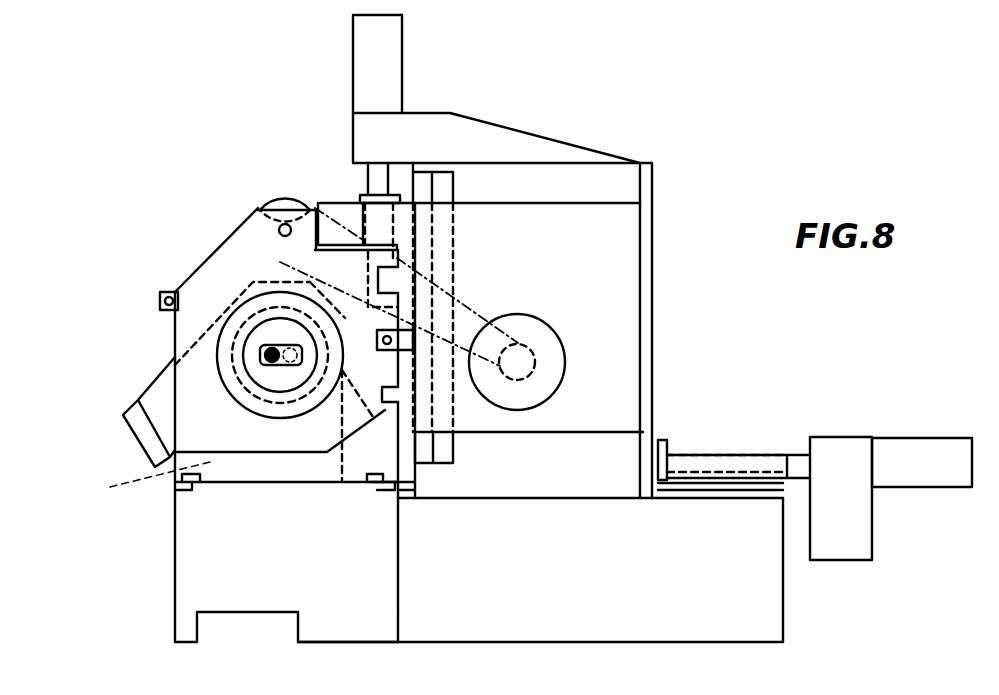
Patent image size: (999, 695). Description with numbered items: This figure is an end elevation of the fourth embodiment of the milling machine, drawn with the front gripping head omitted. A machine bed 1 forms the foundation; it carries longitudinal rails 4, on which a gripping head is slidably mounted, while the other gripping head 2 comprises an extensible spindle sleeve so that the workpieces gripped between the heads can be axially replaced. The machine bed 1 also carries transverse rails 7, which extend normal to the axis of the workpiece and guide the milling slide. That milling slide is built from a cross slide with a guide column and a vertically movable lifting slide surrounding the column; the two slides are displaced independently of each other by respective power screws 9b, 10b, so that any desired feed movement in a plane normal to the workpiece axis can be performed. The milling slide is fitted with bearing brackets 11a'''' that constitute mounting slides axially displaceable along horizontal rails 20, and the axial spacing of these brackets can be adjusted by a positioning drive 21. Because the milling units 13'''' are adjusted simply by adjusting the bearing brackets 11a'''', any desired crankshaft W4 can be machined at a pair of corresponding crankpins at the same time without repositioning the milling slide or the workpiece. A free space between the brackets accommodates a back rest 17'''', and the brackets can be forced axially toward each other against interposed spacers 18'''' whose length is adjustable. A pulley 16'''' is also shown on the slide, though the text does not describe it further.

The machine bed 1 is at (742, 608).
The power screw 10b is at (375, 56).
The bearing bracket 11a'''' is at (252, 321).
The milling unit 13'''' is at (365, 259).
The crankshaft W4 is at (272, 355).
The spacer 18'''' is at (122, 314).
The back rest 17'''' is at (117, 412).
The gripping head 2 is at (151, 481).
The longitudinal rail 4 is at (177, 492).
The horizontal rail 20 is at (385, 410).
The positioning drive 21 is at (390, 338).
The motor pulley 16'''' is at (617, 351).
The transverse rail 7 is at (712, 487).
The power screw 9b is at (913, 450).